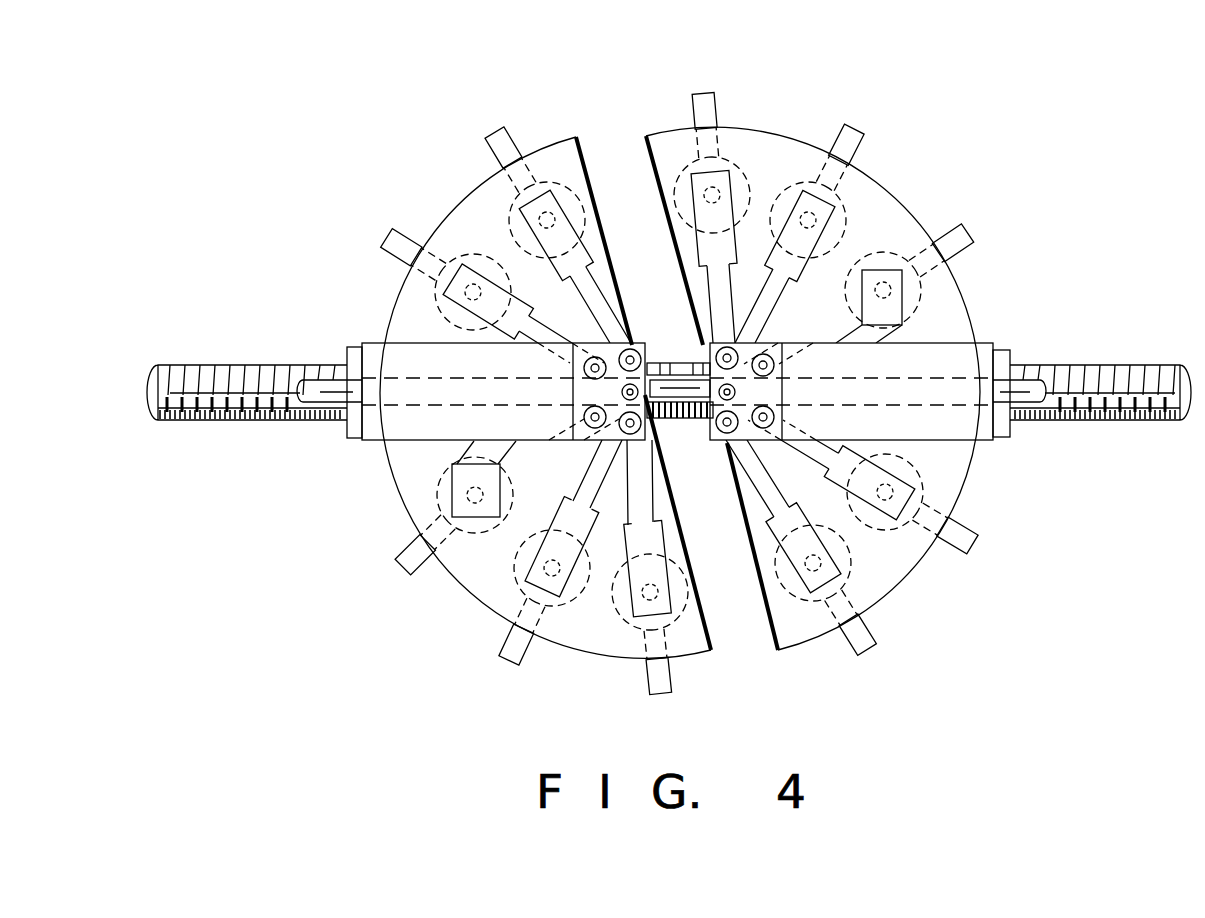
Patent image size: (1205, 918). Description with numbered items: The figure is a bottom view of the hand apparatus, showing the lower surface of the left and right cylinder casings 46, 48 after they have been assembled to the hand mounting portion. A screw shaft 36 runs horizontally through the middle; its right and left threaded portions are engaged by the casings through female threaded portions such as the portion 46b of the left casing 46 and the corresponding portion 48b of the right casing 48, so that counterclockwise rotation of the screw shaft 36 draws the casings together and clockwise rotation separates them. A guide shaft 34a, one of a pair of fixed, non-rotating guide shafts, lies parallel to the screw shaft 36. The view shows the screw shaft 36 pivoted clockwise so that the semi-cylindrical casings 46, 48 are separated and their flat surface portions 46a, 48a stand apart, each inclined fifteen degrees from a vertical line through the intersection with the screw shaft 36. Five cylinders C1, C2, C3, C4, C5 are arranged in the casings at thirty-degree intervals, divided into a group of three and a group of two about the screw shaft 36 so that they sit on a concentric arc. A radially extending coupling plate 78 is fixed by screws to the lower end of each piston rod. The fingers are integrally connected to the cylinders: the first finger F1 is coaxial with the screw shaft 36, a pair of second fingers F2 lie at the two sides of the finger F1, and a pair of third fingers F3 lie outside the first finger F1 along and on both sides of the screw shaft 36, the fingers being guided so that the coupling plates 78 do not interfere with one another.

The screw shaft 36 is at (669, 366).
The guide shaft 34a is at (1022, 386).
The left cylinder casing 46 is at (472, 361).
The flat surface portion 46a is at (582, 137).
The female threaded portion 46b is at (466, 596).
The right cylinder casing 48 is at (882, 415).
The flat surface portion 48a is at (767, 614).
The upper arc of right disc 48b is at (978, 318).
The coupling plate 78 is at (843, 366).
The cylinder C1 is at (882, 590).
The cylinder C2 is at (920, 494).
The cylinder C3 is at (888, 258).
The cylinder C4 is at (804, 180).
The cylinder C5 is at (730, 172).
The first finger F1 is at (690, 400).
The second finger F2 is at (633, 348).
The third finger F3 is at (584, 367).